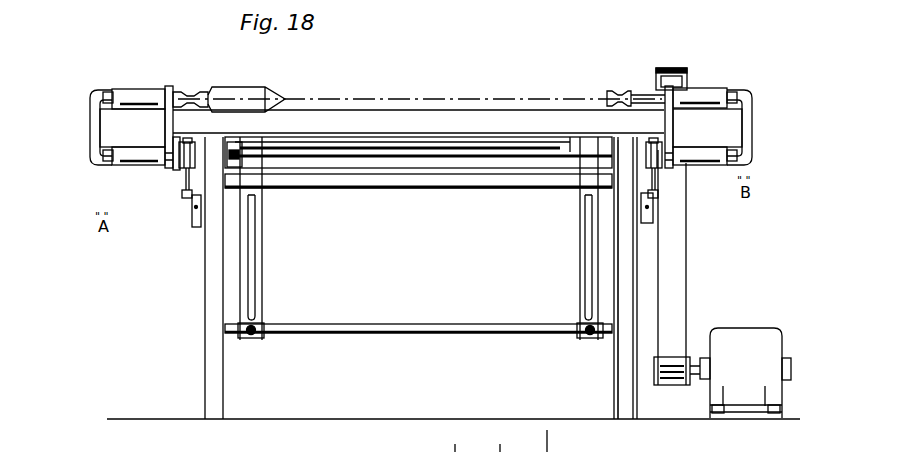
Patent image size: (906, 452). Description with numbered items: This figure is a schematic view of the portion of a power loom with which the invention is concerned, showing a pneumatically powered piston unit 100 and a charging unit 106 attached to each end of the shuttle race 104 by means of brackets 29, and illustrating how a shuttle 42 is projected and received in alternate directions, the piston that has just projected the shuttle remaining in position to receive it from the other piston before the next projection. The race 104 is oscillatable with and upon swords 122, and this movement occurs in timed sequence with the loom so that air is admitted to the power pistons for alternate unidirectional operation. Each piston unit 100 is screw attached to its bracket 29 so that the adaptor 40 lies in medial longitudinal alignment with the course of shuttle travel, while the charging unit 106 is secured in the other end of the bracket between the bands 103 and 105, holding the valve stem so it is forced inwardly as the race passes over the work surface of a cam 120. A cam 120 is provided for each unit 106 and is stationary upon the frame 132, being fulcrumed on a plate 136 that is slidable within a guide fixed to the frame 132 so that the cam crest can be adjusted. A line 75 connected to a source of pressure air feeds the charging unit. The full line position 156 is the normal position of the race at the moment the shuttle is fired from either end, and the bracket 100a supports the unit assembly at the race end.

The bracket 29 is at (170, 86).
The adaptor 40 is at (193, 90).
The shuttle 42 is at (243, 88).
The line 75 is at (183, 142).
The piston unit 100 is at (137, 88).
The cylinder bracket 100a is at (90, 125).
The band 103 is at (145, 165).
The shuttle race 104 is at (404, 124).
The band 105 is at (167, 167).
The charging unit 106 is at (152, 128).
The cam 120 is at (180, 200).
The sword 122 is at (263, 250).
The frame 132 is at (212, 300).
The plate 136 is at (613, 207).
The full line position 156 is at (520, 451).